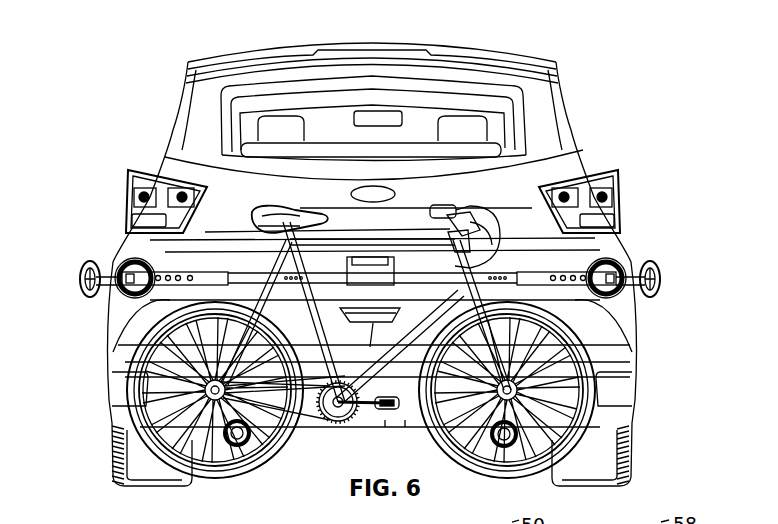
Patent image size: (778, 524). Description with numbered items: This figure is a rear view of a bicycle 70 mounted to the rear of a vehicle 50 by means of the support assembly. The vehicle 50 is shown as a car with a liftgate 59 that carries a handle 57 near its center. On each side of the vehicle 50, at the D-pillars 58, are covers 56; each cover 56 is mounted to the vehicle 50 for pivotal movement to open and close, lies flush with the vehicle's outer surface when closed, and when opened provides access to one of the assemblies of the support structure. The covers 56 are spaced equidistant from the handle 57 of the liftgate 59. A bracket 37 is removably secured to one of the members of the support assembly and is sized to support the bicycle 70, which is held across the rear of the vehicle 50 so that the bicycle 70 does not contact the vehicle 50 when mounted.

The bracket 37 is at (353, 258).
The vehicle 50 is at (454, 53).
The D-pillar 58 is at (157, 170).
The vehicle liftgate 59 is at (157, 237).
The cover 56 is at (117, 332).
The handle 57 is at (320, 412).
The bicycle 70 is at (503, 251).